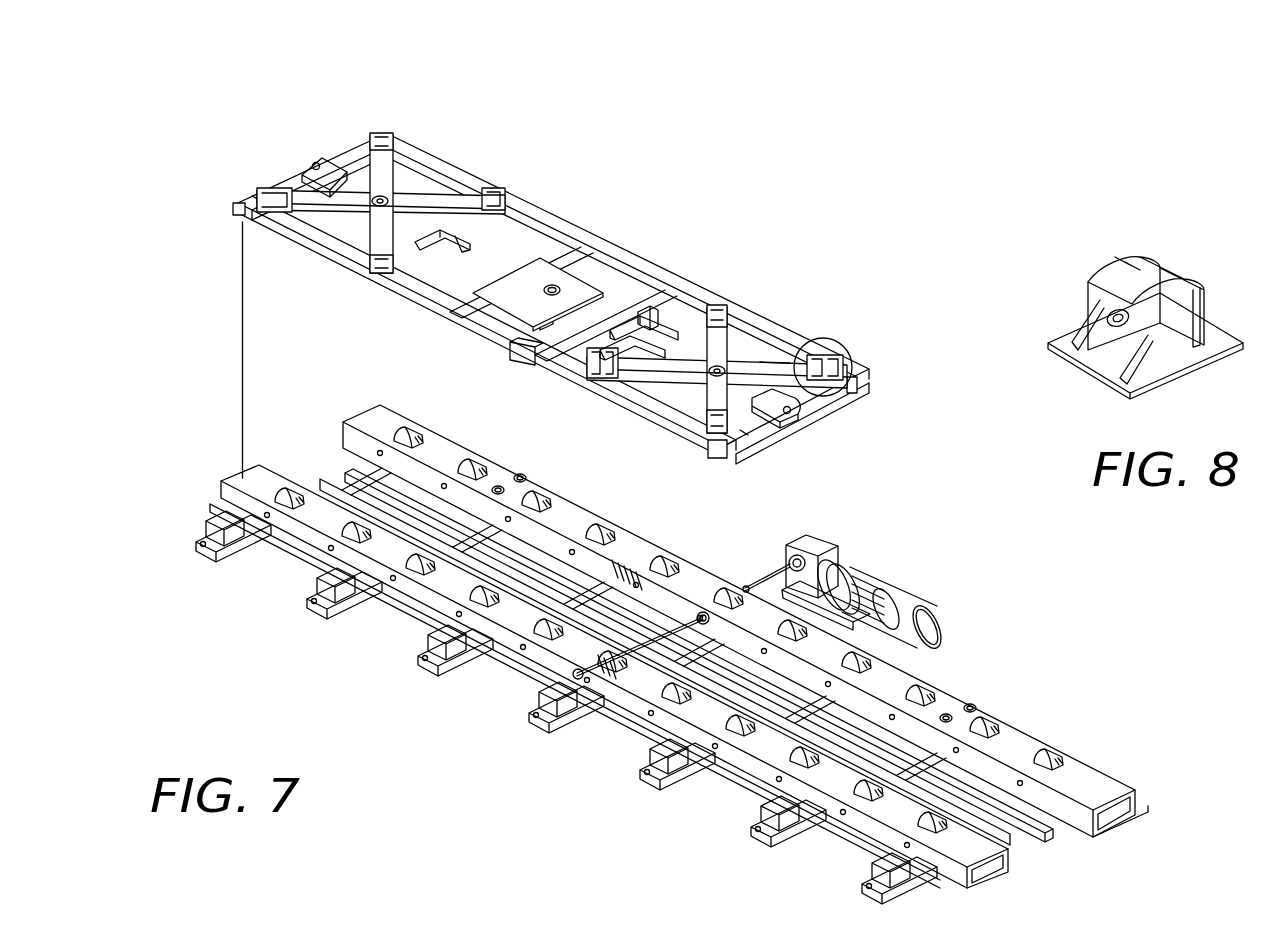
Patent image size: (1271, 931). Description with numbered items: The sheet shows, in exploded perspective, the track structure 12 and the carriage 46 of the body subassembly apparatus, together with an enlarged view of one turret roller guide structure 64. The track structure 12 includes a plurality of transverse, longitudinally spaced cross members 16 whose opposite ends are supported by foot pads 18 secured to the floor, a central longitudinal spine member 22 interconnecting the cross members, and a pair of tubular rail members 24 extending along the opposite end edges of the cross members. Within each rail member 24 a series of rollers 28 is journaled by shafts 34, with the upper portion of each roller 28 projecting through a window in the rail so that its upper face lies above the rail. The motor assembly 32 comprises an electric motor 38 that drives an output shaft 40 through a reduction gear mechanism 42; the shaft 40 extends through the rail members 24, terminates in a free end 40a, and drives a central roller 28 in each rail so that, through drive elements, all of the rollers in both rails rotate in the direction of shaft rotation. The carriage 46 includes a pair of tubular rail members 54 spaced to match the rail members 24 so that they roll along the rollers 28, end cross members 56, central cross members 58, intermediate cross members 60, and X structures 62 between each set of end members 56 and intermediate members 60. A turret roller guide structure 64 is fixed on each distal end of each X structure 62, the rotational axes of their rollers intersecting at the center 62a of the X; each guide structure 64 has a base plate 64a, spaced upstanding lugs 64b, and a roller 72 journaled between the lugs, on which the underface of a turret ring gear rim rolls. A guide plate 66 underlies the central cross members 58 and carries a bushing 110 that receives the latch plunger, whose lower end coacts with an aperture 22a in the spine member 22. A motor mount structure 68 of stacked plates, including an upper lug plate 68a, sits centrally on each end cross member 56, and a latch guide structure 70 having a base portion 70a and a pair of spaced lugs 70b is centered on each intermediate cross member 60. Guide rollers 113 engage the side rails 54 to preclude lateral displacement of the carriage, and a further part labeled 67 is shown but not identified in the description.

In FIG. 7, the track structure 12 is at (988, 671).
In FIG. 7, the cross members 16 is at (330, 188).
In FIG. 7, the foot pads 18 is at (203, 553).
In FIG. 7, the central longitudinal spine member 22 is at (1028, 833).
In FIG. 7, the aperture 22a is at (648, 637).
In FIG. 7, the tubular rail members 24 is at (1110, 773).
In FIG. 7, the rollers 28 is at (790, 763).
In FIG. 7, the motor assembly 32 is at (862, 570).
In FIG. 7, the shaft 34 is at (393, 582).
In FIG. 7, the electric motor 38 is at (942, 613).
In FIG. 7, the output shaft 40 is at (765, 573).
In FIG. 7, the free end 40a is at (580, 670).
In FIG. 7, the reduction gear mechanism 42 is at (793, 540).
In FIG. 7, the carriage 46 is at (552, 205).
In FIG. 7, the tubular rail members 54 is at (545, 365).
In FIG. 7, the end cross members 56 is at (746, 440).
In FIG. 7, the central cross members 58 is at (527, 268).
In FIG. 7, the intermediate cross members 60 is at (400, 268).
In FIG. 7, the X structures 62 is at (793, 362).
In FIG. 7, the center of the X structure 62a is at (777, 365).
In FIG. 7, the turret roller guide structure 64 is at (240, 212).
In FIG. 8, the turret roller guide structure 64 is at (1138, 308).
In FIG. 8, the base plate 64a is at (1175, 378).
In FIG. 8, the upstanding lugs 64b is at (1092, 282).
In FIG. 7, the guide plate 66 is at (570, 270).
In FIG. 7, the brace end 67 is at (492, 198).
In FIG. 7, the motor mount structure 68 is at (780, 424).
In FIG. 7, the upper lug plate 68a is at (312, 166).
In FIG. 7, the latch guide structure 70 is at (445, 247).
In FIG. 7, the base portion 70a is at (677, 352).
In FIG. 7, the spaced lugs 70b is at (612, 325).
In FIG. 8, the roller 72 is at (1133, 258).
In FIG. 7, the bushing 110 is at (505, 330).
In FIG. 7, the guide rollers 113 is at (978, 710).